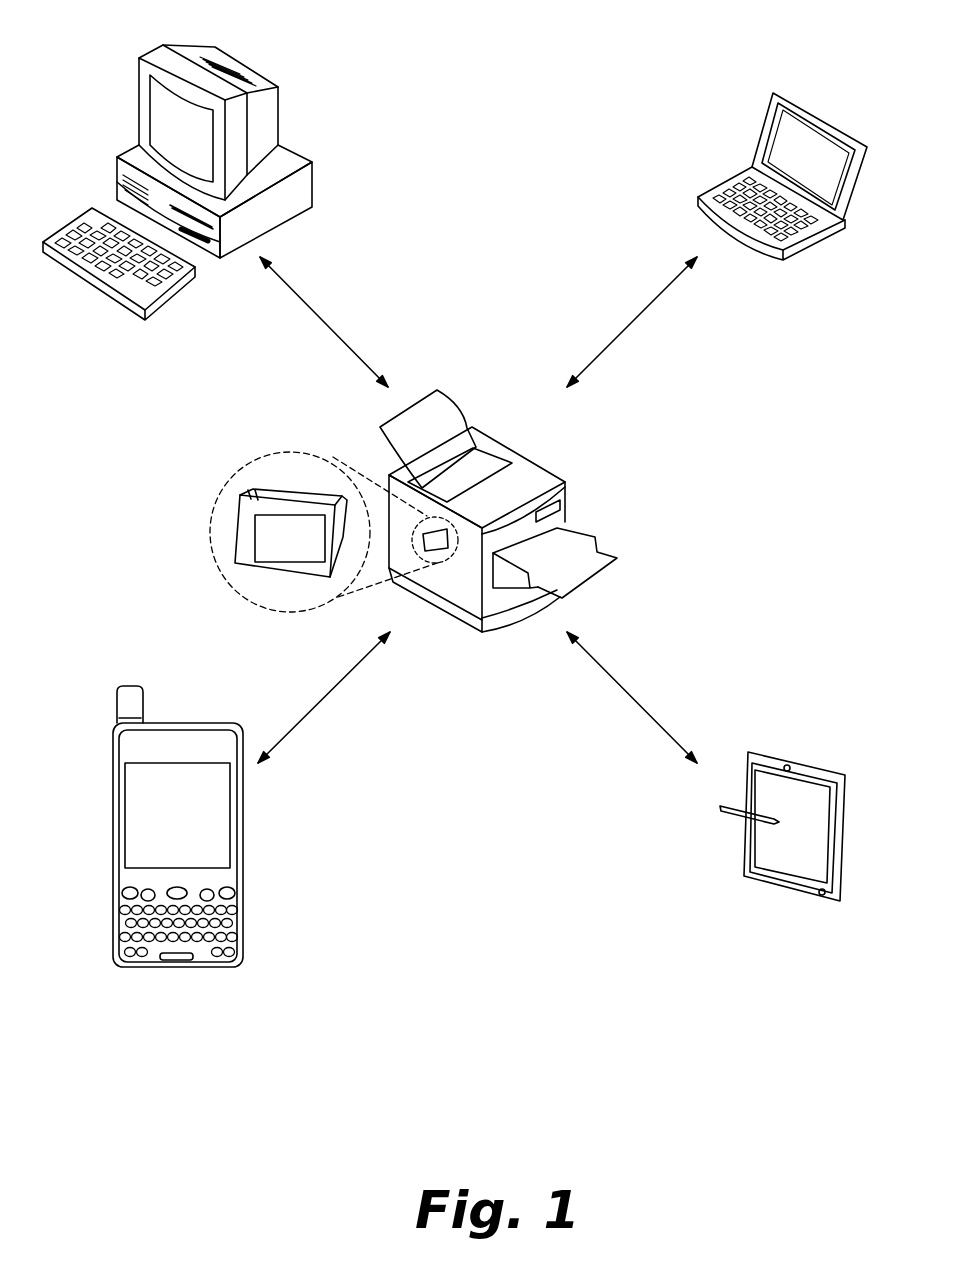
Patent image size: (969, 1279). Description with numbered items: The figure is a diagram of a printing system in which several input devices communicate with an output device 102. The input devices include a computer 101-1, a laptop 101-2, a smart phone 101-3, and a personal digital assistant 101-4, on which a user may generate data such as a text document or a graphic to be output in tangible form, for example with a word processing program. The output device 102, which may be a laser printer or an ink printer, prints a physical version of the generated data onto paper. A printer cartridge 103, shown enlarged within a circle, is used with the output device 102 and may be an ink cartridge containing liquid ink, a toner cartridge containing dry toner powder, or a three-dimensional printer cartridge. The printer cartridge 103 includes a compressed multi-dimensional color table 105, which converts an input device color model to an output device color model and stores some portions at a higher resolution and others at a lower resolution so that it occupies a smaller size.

The computer 101-1 is at (139, 60).
The laptop 101-2 is at (758, 131).
The smart phone 101-3 is at (113, 762).
The personal digital assistant 101-4 is at (746, 757).
The output device 102 is at (562, 482).
The printer cartridge 103 is at (237, 517).
The compressed multi-dimensional color table 105 is at (309, 550).